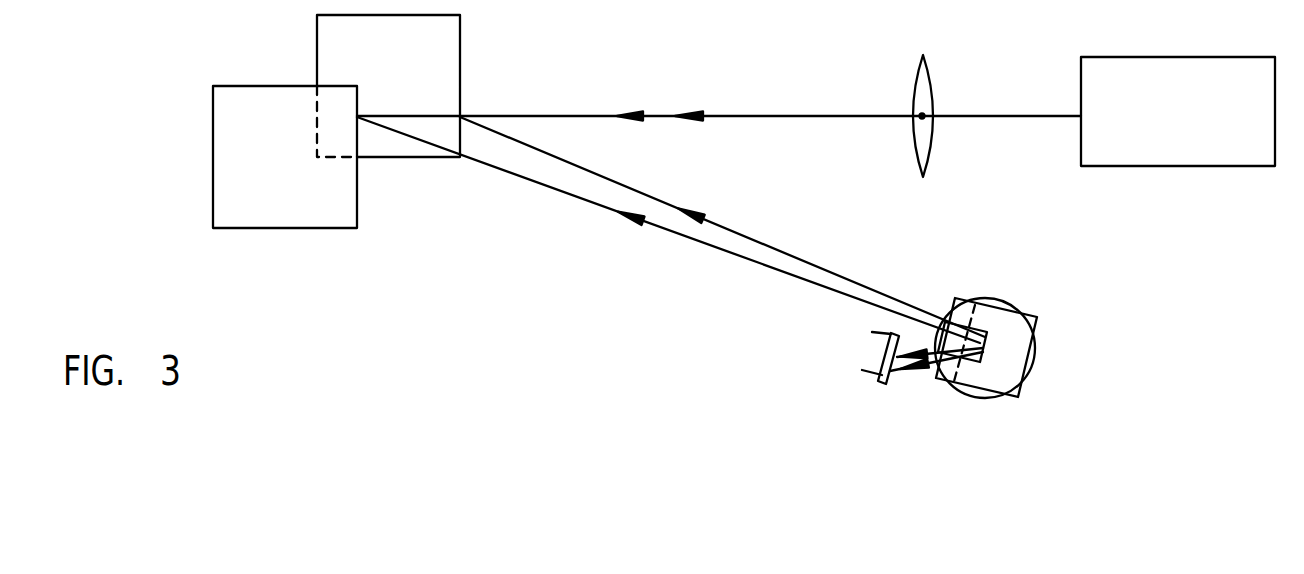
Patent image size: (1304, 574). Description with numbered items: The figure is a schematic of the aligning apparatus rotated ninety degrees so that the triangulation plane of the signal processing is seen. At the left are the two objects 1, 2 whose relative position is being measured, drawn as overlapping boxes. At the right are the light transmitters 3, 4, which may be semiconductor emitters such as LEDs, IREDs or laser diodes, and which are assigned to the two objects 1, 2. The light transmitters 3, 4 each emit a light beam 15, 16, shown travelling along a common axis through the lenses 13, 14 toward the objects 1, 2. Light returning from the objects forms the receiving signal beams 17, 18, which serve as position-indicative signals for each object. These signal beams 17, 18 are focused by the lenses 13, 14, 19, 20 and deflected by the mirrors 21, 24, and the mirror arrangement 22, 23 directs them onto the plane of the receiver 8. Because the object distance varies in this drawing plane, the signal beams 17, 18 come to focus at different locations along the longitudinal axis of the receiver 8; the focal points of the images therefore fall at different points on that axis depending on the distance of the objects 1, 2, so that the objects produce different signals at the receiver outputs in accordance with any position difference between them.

The object 1 is at (233, 130).
The object 2 is at (340, 72).
The light transmitter 3 is at (1180, 85).
The light transmitter 4 is at (1188, 77).
The receiver 8 is at (875, 353).
The lens 13 is at (968, 101).
The lens 14 is at (927, 87).
The light beam 15 is at (719, 85).
The light beam 16 is at (625, 114).
The signal beam 17 is at (625, 220).
The signal beam 18 is at (690, 210).
The lens 19 is at (1068, 332).
The lens 20 is at (1068, 332).
The mirror 21 is at (1069, 332).
The mirror 22 is at (1069, 332).
The mirror 23 is at (1069, 332).
The mirror 24 is at (1007, 328).